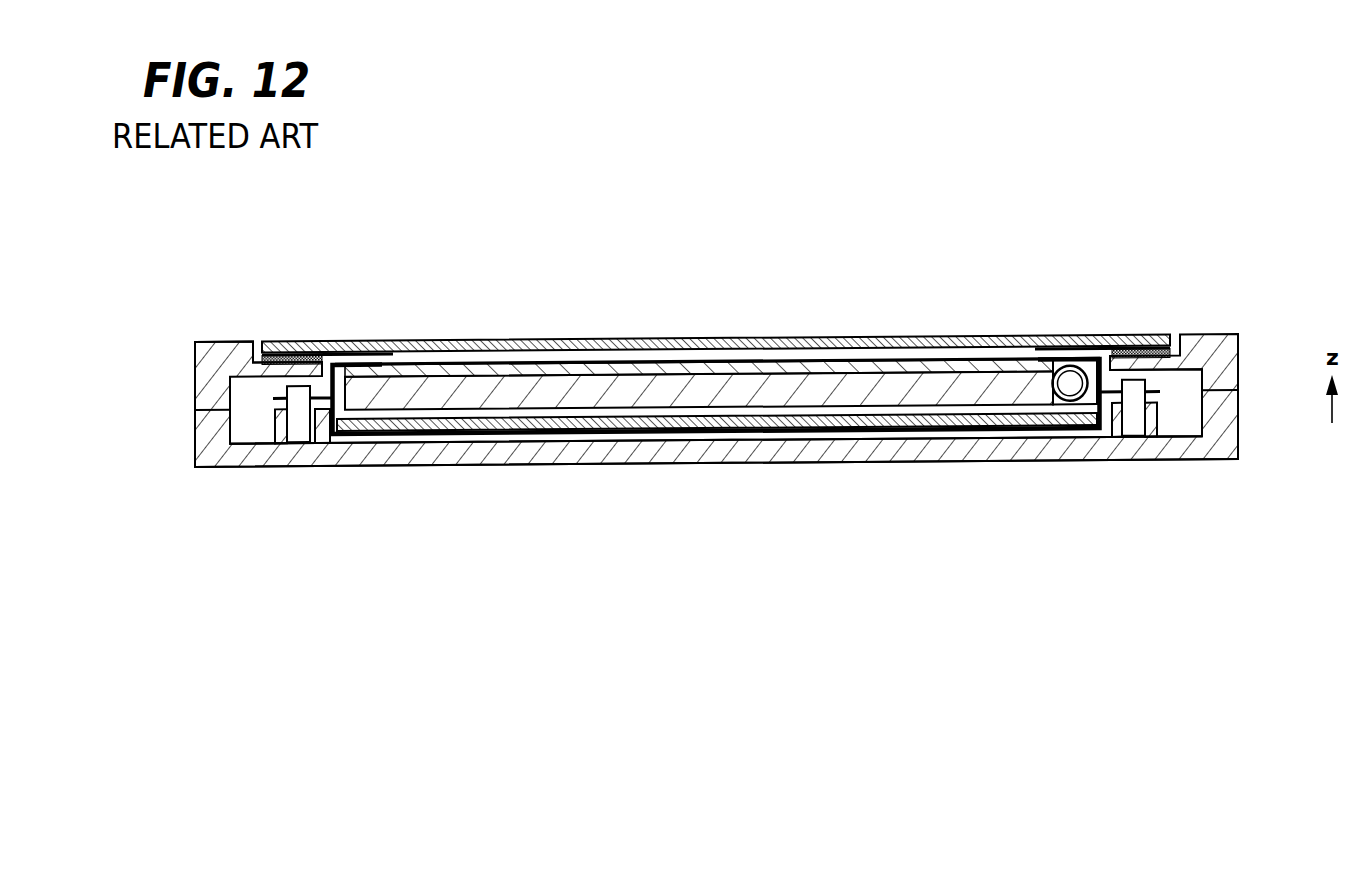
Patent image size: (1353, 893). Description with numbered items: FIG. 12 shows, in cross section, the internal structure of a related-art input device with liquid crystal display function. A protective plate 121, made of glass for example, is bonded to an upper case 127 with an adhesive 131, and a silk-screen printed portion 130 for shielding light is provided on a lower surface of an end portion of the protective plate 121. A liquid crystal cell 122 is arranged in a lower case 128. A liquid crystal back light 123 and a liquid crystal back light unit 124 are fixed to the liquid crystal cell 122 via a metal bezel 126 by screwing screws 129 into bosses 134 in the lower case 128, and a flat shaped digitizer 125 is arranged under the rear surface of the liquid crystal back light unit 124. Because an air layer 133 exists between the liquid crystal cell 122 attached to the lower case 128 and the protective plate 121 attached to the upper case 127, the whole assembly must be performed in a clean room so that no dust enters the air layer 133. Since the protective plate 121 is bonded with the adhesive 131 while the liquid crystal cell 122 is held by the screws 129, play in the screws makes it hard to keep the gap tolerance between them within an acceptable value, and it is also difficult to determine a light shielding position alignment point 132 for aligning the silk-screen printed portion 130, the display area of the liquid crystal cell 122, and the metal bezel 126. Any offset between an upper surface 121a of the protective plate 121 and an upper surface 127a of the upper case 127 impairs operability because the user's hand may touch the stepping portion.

The protective plate 121 is at (605, 341).
The upper surface of the protective plate 121a is at (922, 337).
The liquid crystal cell 122 is at (742, 370).
The liquid crystal back light 123 is at (1067, 372).
The liquid crystal back light unit 124 is at (782, 395).
The digitizer 125 is at (667, 420).
The metal bezel 126 is at (1080, 349).
The upper case 127 is at (220, 372).
The upper surface of the upper case 127a is at (232, 341).
The lower case 128 is at (252, 457).
The screws 129 is at (1132, 418).
The silk-screen printed portion 130 is at (351, 356).
The adhesive 131 is at (290, 352).
The light shielding position alignment point 132 is at (380, 363).
The air layer 133 is at (558, 355).
The bosses 134 is at (1157, 418).